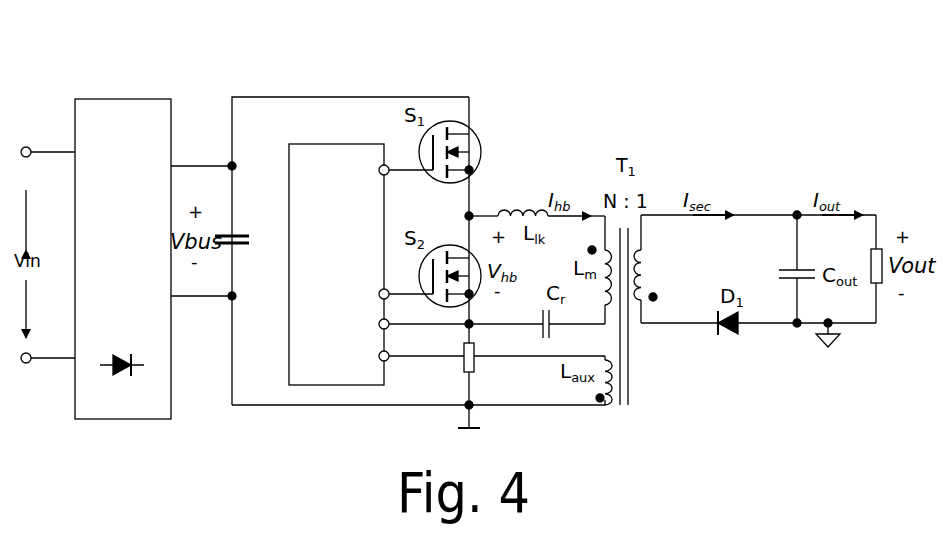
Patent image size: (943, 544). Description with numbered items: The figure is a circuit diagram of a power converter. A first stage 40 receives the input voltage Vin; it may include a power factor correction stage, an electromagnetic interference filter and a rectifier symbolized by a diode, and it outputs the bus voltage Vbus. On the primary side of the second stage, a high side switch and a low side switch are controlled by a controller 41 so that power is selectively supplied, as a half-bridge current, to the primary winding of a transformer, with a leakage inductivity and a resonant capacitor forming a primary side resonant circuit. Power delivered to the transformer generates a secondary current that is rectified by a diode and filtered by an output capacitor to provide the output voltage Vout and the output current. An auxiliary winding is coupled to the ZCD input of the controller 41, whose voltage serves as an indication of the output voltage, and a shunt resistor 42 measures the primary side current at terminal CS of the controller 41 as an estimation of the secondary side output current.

The first stage 40 is at (124, 99).
The controller 41 is at (335, 144).
The shunt resistor 42 is at (476, 375).